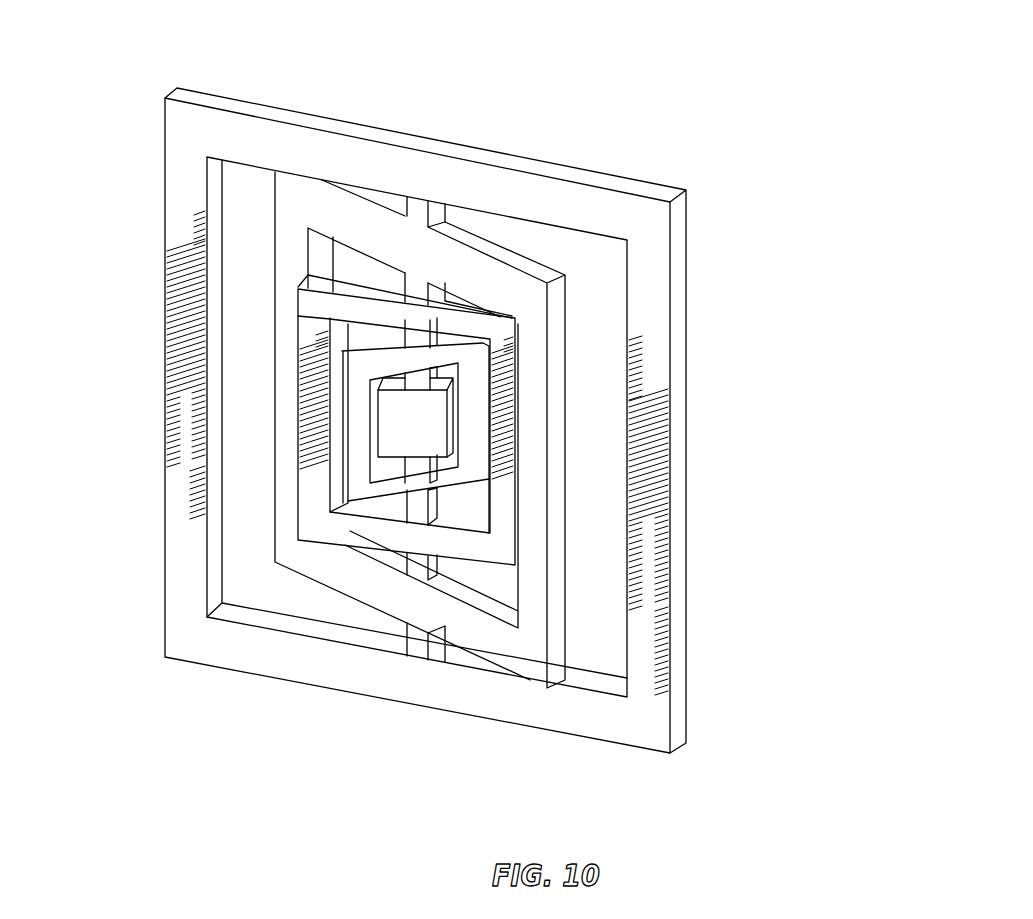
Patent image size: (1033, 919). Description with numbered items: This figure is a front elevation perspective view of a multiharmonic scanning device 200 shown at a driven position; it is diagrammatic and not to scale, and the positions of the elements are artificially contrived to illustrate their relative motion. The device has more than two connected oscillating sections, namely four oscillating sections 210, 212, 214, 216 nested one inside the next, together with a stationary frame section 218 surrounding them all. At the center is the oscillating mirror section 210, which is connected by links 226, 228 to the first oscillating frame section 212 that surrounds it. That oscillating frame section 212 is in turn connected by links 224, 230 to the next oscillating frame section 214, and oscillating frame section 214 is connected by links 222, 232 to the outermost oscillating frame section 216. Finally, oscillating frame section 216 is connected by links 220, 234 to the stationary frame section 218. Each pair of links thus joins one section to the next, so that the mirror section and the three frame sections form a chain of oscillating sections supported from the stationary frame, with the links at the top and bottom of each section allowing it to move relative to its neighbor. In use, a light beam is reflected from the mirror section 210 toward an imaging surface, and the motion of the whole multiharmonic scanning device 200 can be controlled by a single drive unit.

The multiharmonic scanning device 200 is at (736, 178).
The oscillating mirror section 210 is at (447, 437).
The oscillating frame section 212 is at (343, 467).
The oscillating frame section 214 is at (297, 363).
The oscillating frame section 216 is at (436, 382).
The stationary frame section 218 is at (689, 461).
The link 220 is at (446, 207).
The link 222 is at (398, 288).
The link 224 is at (432, 345).
The link 226 is at (458, 381).
The link 228 is at (447, 470).
The link 230 is at (440, 478).
The link 232 is at (395, 558).
The link 234 is at (403, 638).